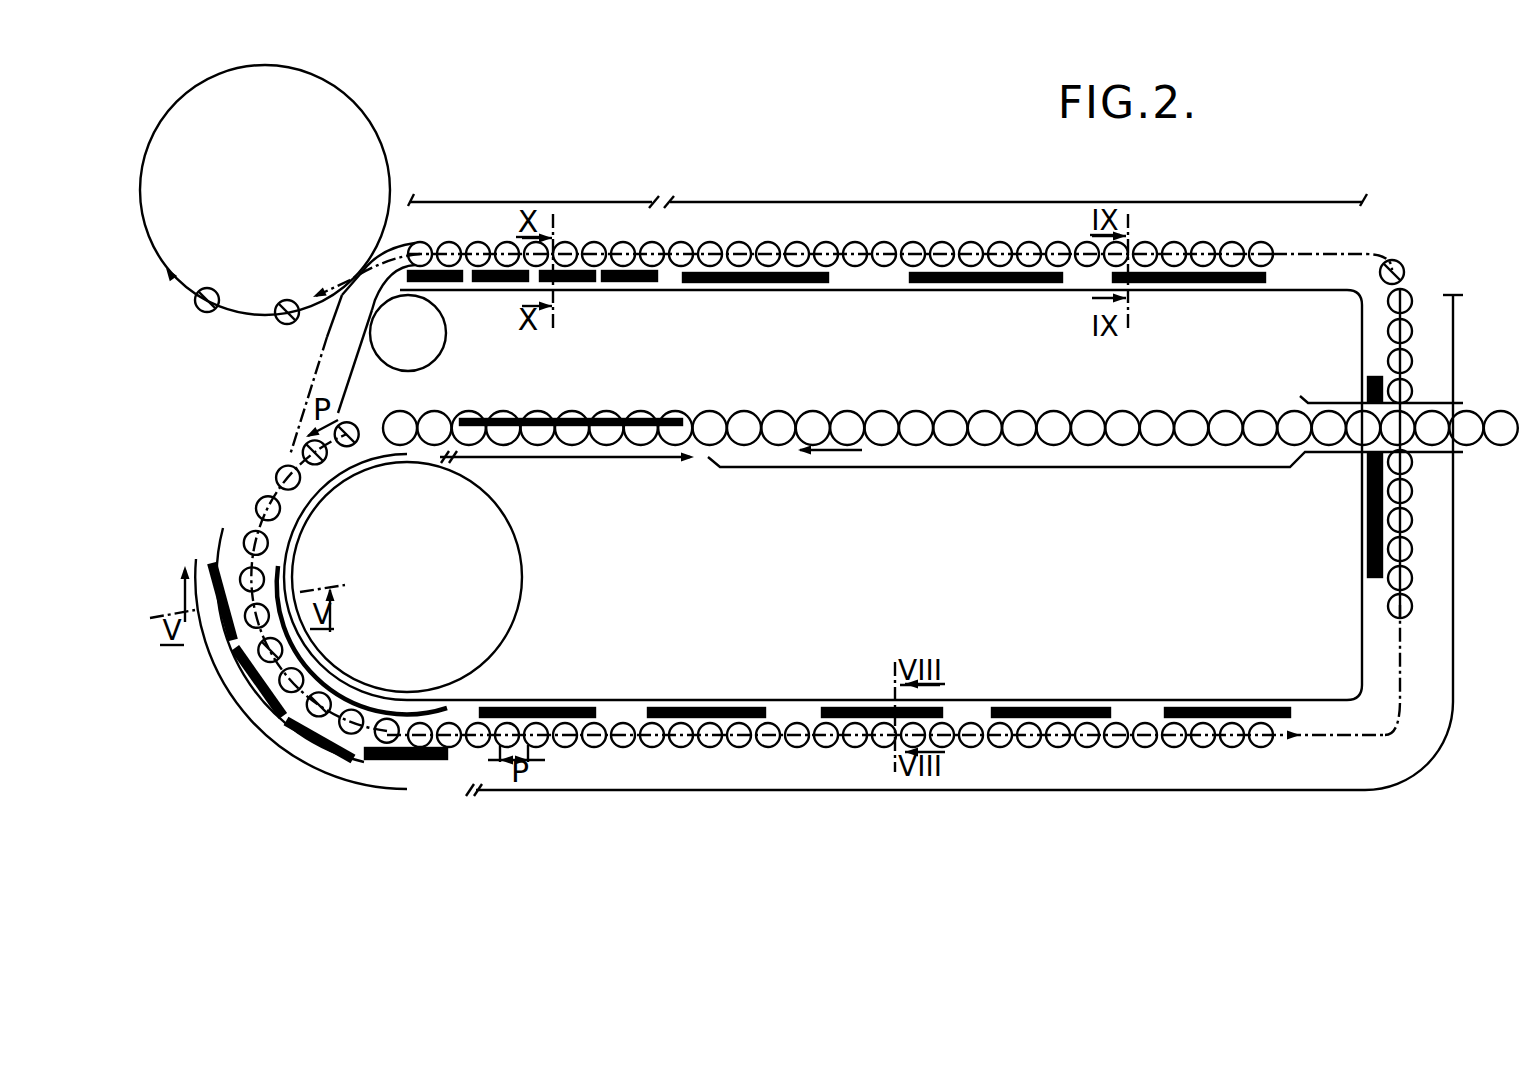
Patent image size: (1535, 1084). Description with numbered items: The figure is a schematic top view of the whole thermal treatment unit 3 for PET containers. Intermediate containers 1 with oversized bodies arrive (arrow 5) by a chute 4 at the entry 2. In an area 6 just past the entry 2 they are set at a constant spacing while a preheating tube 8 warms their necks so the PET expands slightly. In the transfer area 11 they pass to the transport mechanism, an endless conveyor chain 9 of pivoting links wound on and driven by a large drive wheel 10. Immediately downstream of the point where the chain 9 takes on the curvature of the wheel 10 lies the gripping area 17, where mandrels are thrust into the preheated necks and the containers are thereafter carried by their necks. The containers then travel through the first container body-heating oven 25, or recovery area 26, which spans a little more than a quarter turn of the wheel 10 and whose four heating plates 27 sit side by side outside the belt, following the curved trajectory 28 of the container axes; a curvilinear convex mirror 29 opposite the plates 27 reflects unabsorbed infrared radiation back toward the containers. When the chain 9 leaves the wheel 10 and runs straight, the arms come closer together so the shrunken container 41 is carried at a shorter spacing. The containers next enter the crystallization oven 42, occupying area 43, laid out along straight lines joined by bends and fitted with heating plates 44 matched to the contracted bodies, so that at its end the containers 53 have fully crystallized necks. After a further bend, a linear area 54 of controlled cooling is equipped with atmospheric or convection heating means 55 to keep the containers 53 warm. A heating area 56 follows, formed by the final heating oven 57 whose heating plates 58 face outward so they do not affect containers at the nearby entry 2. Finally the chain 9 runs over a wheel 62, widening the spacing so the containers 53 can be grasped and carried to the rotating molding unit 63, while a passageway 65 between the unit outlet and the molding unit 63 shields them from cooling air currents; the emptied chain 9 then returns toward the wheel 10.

The intermediate containers 1 is at (962, 422).
The entry 2 is at (698, 452).
The thermal treatment unit 3 is at (870, 578).
The chute 4 is at (985, 468).
The arrow 5 is at (855, 456).
The area 6 is at (537, 458).
The preheating tube 8 is at (620, 418).
The endless conveyor chain 9 is at (355, 357).
The drive wheel 10 is at (505, 579).
The transfer area 11 is at (340, 474).
The gripping area 17 is at (237, 535).
The first container body-heating oven 25 is at (277, 722).
The recovery area 26 is at (240, 712).
The heating plates 27 is at (255, 680).
The trajectory 28 is at (272, 648).
The curvilinear convex mirror 29 is at (372, 690).
The container 41 is at (600, 742).
The crystallization oven 42 is at (975, 718).
The area 43 is at (980, 791).
The heating plates 44 is at (575, 706).
The containers 53 is at (906, 250).
The linear area 54 is at (1000, 202).
The atmospheric or convection heating means 55 is at (810, 283).
The heating area 56 is at (600, 202).
The final heating oven 57 is at (525, 258).
The heating plates 58 is at (480, 282).
The wheel 62 is at (430, 333).
The rotating molding unit 63 is at (237, 206).
The passageway 65 is at (382, 248).